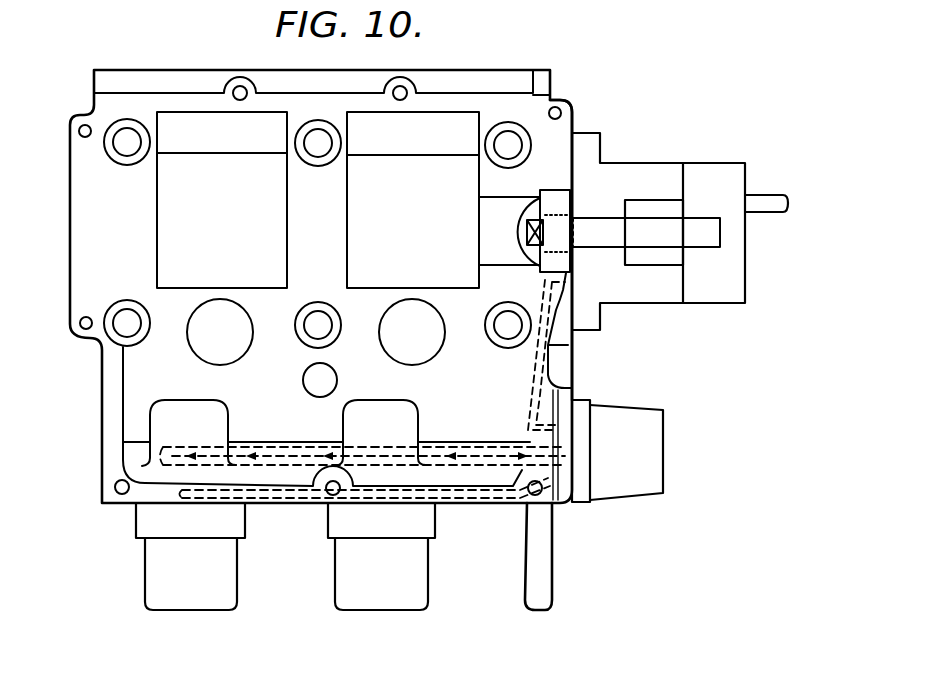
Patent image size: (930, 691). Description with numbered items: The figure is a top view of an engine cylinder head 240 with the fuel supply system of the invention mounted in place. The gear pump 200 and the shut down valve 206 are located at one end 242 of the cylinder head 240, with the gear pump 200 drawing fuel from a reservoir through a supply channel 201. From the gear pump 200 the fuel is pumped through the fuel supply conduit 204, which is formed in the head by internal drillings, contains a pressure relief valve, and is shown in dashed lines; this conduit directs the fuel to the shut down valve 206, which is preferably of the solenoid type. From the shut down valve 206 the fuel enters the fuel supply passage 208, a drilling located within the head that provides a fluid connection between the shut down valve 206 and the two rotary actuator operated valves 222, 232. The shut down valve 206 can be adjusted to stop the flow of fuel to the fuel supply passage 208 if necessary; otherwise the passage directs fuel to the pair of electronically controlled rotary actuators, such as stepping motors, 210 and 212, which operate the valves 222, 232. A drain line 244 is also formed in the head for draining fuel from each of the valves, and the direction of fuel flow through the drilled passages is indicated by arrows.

The engine cylinder head 240 is at (58, 246).
The end of the cylinder head 242 is at (575, 118).
The gear pump 200 is at (707, 172).
The supply channel 201 is at (770, 206).
The fuel supply conduit 204 is at (574, 347).
The shut down valve 206 is at (652, 463).
The fuel supply passage 208 is at (470, 440).
The drain line 244 is at (472, 502).
The rotary actuator operated valve 222 is at (181, 398).
The rotary actuator operated valve 232 is at (373, 398).
The rotary actuator 210 is at (155, 578).
The rotary actuator 212 is at (350, 578).